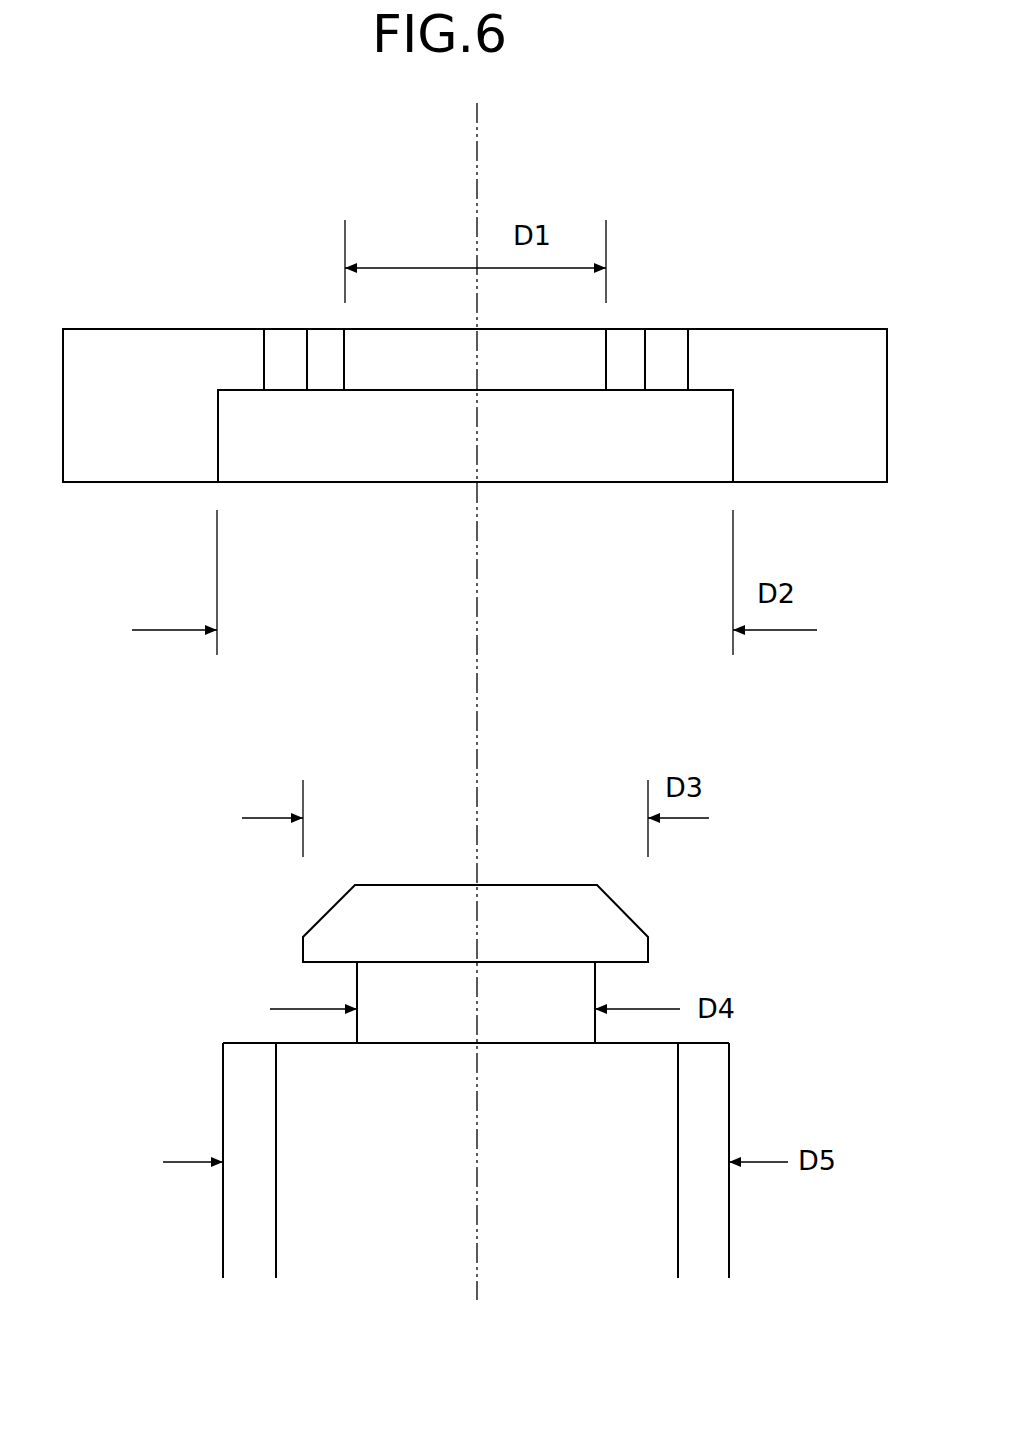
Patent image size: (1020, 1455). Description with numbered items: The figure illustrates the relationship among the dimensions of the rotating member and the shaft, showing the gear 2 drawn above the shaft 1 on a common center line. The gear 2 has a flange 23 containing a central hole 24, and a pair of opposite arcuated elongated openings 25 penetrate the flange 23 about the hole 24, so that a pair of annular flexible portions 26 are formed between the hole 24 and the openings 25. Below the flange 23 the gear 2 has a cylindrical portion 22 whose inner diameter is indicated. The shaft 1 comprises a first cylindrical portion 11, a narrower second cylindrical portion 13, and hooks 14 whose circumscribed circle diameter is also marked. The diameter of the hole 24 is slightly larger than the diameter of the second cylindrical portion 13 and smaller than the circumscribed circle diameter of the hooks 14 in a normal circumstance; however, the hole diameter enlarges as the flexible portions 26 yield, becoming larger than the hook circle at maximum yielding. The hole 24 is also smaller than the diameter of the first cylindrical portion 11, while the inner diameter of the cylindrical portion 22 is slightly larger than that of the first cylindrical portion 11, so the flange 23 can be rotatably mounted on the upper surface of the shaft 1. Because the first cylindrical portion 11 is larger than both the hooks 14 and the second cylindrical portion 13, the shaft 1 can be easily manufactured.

The shaft 1 is at (413, 1080).
The first cylindrical portion 11 is at (223, 1096).
The second cylindrical portion 13 is at (355, 986).
The hooks 14 is at (324, 918).
The gear 2 is at (475, 417).
The cylindrical portion 22 is at (160, 467).
The flange 23 is at (241, 350).
The hole 24 is at (573, 383).
The arcuated elongated openings 25 is at (283, 378).
The annular flexible portions 26 is at (322, 380).